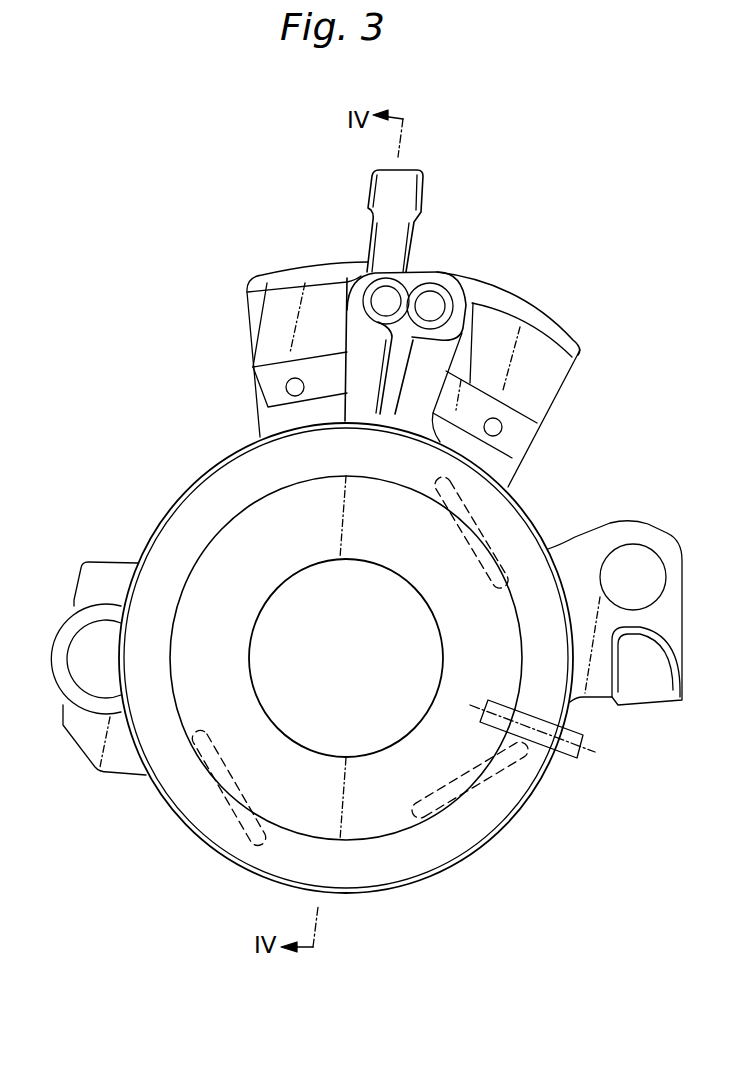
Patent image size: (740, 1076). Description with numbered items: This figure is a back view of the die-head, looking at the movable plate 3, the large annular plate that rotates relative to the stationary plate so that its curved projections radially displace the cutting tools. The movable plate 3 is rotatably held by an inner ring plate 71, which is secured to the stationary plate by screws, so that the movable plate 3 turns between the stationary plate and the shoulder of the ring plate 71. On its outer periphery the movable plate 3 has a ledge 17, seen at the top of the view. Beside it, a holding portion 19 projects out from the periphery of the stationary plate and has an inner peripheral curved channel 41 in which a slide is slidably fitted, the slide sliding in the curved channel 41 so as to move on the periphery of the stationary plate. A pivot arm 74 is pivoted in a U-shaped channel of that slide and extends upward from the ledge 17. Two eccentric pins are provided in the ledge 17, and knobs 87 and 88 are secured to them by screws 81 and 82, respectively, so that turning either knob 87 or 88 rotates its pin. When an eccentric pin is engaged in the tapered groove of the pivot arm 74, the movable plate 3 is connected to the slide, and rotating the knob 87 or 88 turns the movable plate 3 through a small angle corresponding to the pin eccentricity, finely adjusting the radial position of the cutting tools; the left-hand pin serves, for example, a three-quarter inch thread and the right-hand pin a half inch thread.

The movable plate 3 is at (457, 848).
The ledge 17 is at (433, 314).
The holding portion 19 is at (572, 343).
The curved channel 41 is at (268, 320).
The inner ring plate 71 is at (393, 820).
The pivot arm 74 is at (370, 208).
The screw 81 is at (399, 296).
The screw 82 is at (440, 308).
The knob 87 is at (386, 301).
The knob 88 is at (430, 300).